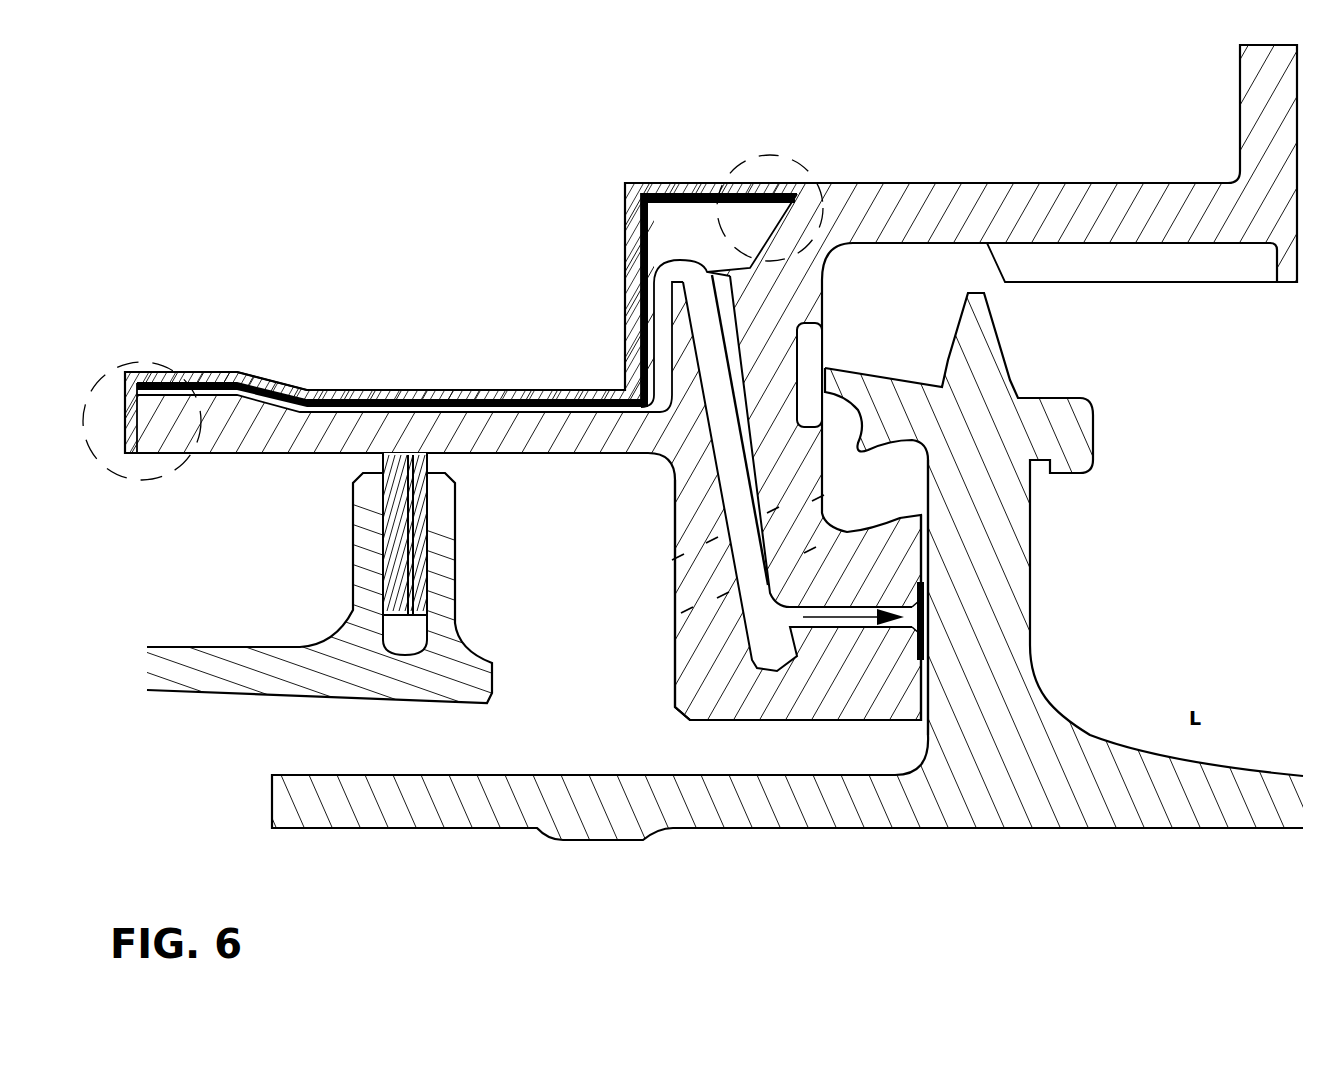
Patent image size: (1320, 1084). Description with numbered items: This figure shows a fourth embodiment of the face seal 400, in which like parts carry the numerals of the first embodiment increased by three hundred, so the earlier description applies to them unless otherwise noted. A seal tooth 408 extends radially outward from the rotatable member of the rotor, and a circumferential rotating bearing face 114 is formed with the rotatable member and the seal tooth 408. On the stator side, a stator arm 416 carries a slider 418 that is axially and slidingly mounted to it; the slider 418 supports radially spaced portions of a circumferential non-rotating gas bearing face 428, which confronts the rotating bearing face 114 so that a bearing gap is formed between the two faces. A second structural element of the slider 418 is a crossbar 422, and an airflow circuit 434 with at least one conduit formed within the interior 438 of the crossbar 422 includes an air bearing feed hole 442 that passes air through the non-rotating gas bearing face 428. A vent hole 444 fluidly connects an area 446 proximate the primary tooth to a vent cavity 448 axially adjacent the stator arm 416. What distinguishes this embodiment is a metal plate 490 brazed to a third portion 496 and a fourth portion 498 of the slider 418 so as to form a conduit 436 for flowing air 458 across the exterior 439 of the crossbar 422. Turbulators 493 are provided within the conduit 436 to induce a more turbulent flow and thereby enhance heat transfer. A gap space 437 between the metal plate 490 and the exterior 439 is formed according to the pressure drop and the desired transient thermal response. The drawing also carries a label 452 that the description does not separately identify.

The face seal 400 is at (1098, 72).
The seal tooth 408 is at (893, 400).
The circumferential rotating bearing face 114 is at (930, 552).
The stator arm 416 is at (250, 693).
The slider 418 is at (586, 262).
The crossbar 422 is at (272, 415).
The non-rotating gas bearing face 428 is at (917, 673).
The airflow circuit 434 is at (405, 386).
The conduit 436 is at (473, 405).
The gap space 437 is at (187, 437).
The interior of the crossbar 438 is at (347, 433).
The exterior 439 is at (562, 412).
The air bearing feed hole 442 is at (853, 667).
The vent hole 444 is at (703, 580).
The area proximate the primary tooth 446 is at (873, 503).
The vent cavity 448 is at (525, 564).
The body 452 is at (563, 147).
The air 458 is at (747, 485).
The metal plate 490 is at (370, 392).
The turbulators 493 is at (690, 191).
The third portion of the slider 496 is at (777, 148).
The fourth portion of the slider 498 is at (168, 462).